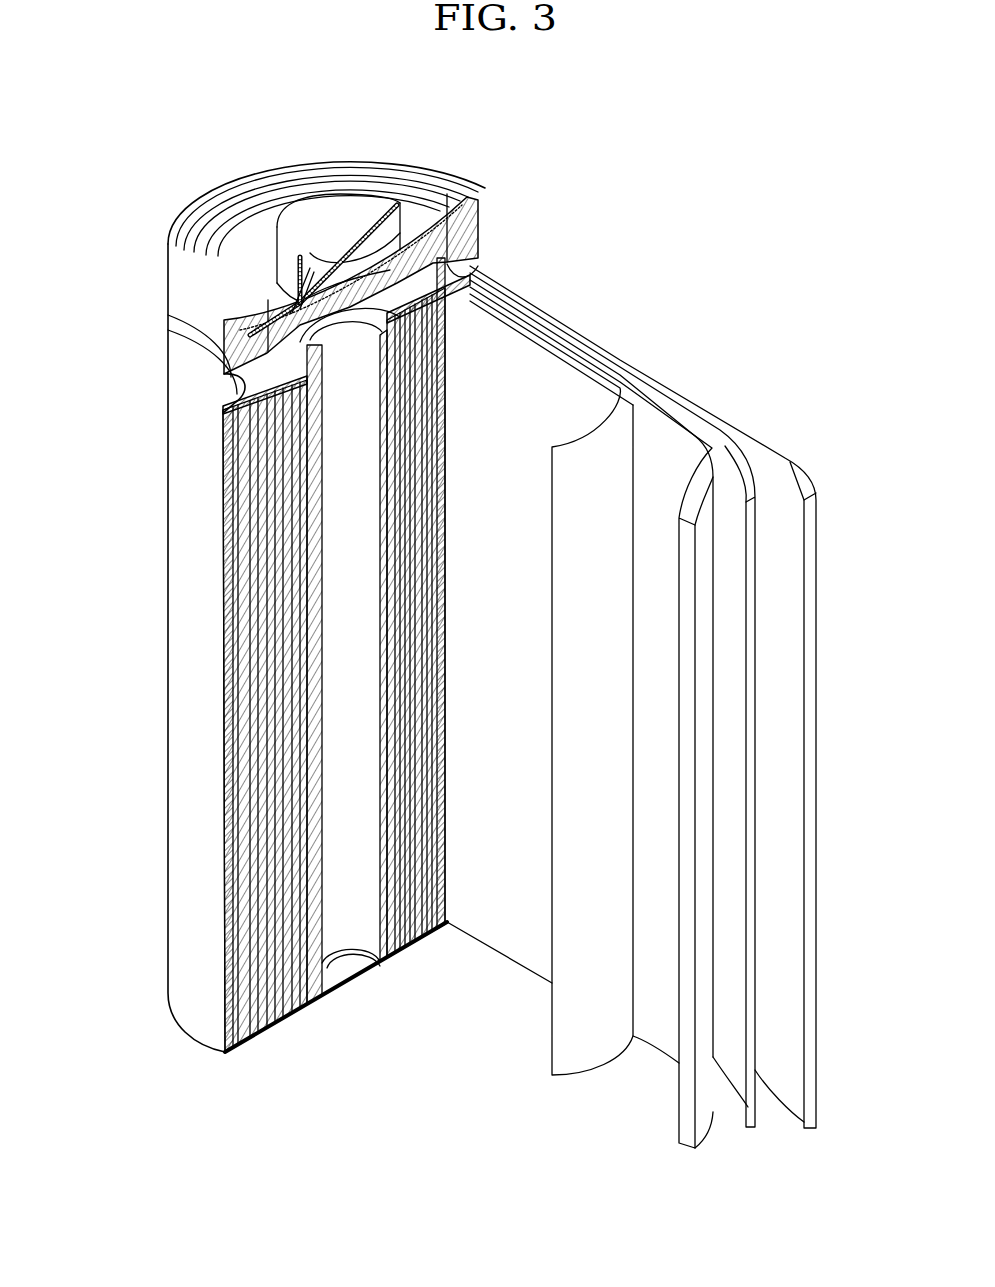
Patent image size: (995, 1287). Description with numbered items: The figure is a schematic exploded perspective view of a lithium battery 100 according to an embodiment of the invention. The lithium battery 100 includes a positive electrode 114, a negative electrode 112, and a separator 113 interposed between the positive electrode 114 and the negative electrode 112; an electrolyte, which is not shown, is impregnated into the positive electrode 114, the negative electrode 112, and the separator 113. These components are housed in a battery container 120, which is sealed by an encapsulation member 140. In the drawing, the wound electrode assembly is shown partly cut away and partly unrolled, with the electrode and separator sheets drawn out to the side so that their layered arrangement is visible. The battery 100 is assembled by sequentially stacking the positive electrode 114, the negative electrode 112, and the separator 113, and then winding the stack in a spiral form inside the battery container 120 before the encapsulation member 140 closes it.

The lithium battery 100 is at (655, 172).
The negative electrode 112 is at (786, 460).
The separator 113 is at (560, 353).
The positive electrode 114 is at (648, 412).
The battery container 120 is at (177, 640).
The encapsulation member 140 is at (331, 213).